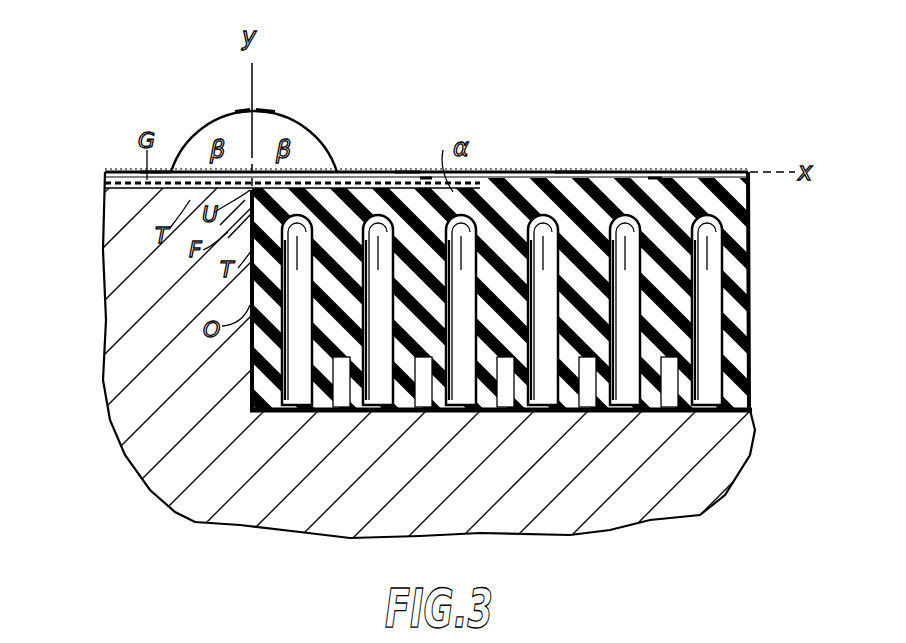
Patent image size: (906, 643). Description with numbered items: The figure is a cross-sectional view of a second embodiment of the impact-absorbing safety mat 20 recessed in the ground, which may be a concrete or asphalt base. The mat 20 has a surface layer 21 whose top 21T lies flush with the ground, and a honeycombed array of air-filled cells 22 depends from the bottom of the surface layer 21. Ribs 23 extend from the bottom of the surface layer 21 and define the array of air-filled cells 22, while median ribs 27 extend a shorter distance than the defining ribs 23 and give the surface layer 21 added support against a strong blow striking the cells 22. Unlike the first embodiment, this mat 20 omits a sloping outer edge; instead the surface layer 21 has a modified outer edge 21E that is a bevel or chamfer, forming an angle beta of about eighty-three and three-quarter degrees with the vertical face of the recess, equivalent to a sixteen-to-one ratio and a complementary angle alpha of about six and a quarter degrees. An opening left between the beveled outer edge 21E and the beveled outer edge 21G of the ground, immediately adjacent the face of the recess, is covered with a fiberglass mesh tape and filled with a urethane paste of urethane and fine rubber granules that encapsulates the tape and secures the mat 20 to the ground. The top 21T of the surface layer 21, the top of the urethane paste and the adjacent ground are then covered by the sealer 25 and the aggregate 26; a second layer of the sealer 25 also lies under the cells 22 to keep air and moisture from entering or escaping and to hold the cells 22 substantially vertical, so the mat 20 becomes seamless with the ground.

The impact-absorbing safety mat 20 is at (752, 300).
The surface layer 21 is at (738, 207).
The outer edge 21E is at (400, 186).
The beveled outer edge of the ground 21G is at (150, 207).
The top of the surface layer 21T is at (572, 186).
The air-filled cells 22 is at (712, 335).
The ribs 23 is at (748, 375).
The sealer 25 is at (400, 186).
The aggregate 26 is at (425, 186).
The median ribs 27 is at (655, 186).